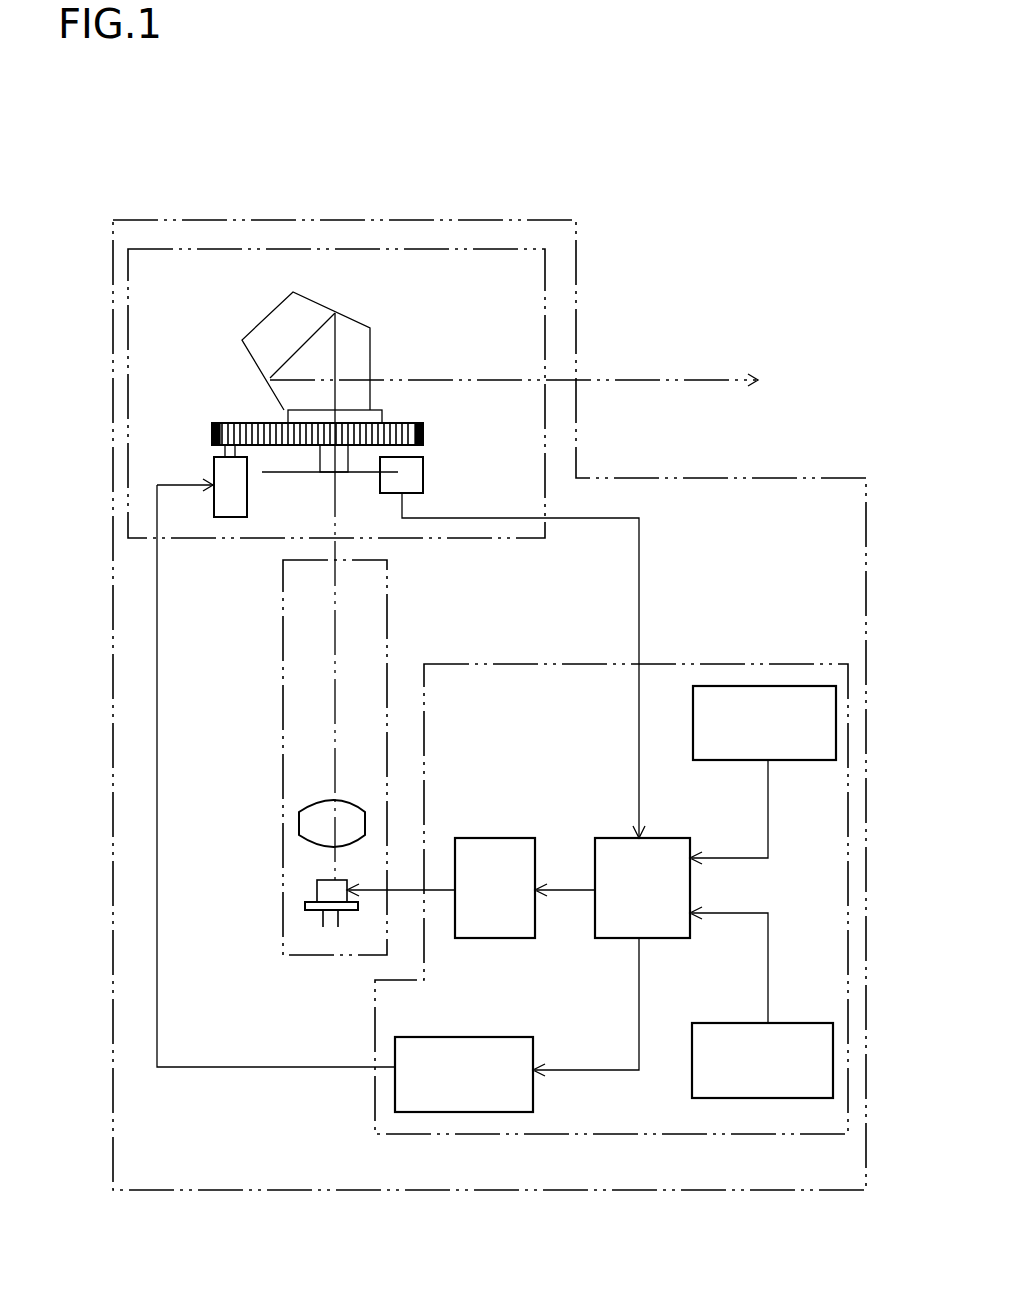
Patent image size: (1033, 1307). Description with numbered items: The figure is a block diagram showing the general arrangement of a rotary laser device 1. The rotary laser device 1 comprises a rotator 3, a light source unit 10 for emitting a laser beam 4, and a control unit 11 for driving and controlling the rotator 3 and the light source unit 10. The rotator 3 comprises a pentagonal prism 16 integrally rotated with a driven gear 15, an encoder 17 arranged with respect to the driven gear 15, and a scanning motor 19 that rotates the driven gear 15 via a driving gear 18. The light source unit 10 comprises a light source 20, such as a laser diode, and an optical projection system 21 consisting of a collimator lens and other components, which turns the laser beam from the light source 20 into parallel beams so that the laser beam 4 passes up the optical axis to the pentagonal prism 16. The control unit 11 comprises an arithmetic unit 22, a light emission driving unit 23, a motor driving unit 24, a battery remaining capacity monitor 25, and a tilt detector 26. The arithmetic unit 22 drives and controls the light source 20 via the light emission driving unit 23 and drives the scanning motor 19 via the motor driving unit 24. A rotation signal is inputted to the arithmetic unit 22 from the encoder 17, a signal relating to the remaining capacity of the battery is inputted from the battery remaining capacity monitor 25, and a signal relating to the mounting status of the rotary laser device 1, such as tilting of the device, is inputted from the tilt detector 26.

The rotary laser device 1 is at (675, 470).
The rotator 3 is at (545, 323).
The laser beam 4 is at (410, 380).
The light source unit 10 is at (283, 768).
The control unit 11 is at (665, 664).
The driven gear 15 is at (420, 428).
The pentagonal prism 16 is at (268, 317).
The encoder 17 is at (435, 478).
The driving gear 18 is at (215, 426).
The scanning motor 19 is at (213, 467).
The light source 20 is at (317, 888).
The optical projection system 21 is at (299, 823).
The arithmetic unit 22 is at (653, 940).
The light emission driving unit 23 is at (500, 838).
The motor driving unit 24 is at (478, 1037).
The battery remaining capacity monitor 25 is at (693, 745).
The tilt detector 26 is at (797, 1023).